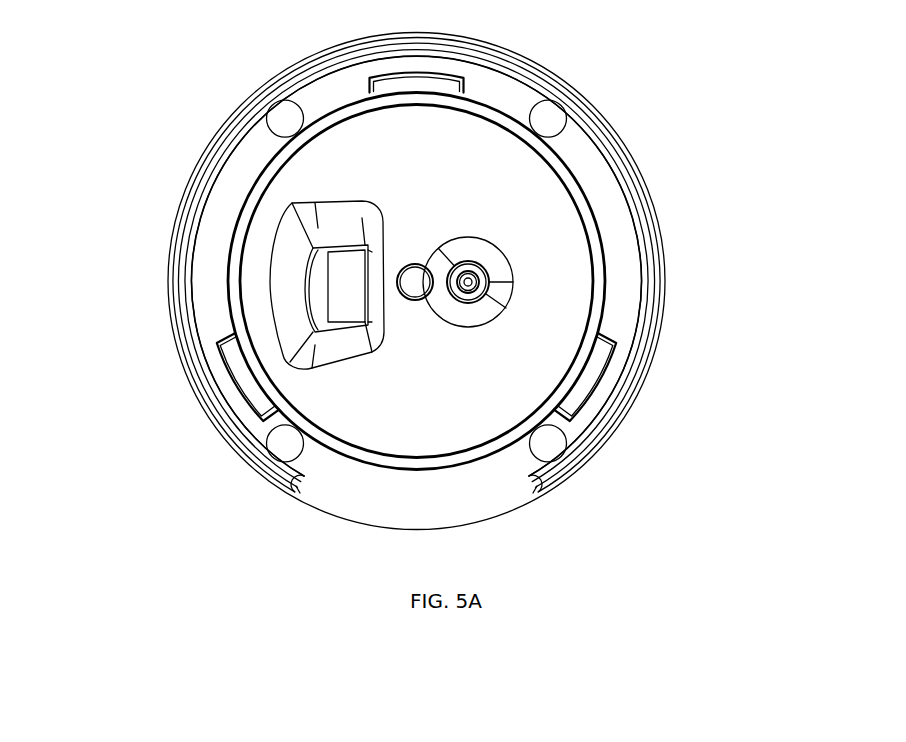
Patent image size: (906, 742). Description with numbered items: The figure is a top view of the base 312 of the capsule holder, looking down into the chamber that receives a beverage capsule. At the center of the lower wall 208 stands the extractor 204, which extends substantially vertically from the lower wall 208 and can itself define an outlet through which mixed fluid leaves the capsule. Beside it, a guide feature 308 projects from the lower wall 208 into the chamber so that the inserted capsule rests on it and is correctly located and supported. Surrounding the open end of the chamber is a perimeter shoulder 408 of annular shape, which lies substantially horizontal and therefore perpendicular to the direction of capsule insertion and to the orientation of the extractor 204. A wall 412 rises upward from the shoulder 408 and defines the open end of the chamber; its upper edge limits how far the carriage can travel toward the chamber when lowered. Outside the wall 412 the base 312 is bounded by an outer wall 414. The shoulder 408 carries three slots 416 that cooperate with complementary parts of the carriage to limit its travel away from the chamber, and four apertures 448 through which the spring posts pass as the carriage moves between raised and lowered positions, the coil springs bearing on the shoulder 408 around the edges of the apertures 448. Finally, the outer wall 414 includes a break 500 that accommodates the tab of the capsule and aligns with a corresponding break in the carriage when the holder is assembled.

The extractor 204 is at (466, 282).
The lower wall 208 is at (557, 306).
The guide feature 308 is at (337, 235).
The base 312 is at (672, 226).
The perimeter shoulder 408 is at (197, 269).
The wall 412 is at (247, 203).
The outer wall 414 is at (173, 252).
The slot 416 is at (442, 80).
The aperture 448 is at (275, 108).
The break 500 is at (370, 505).